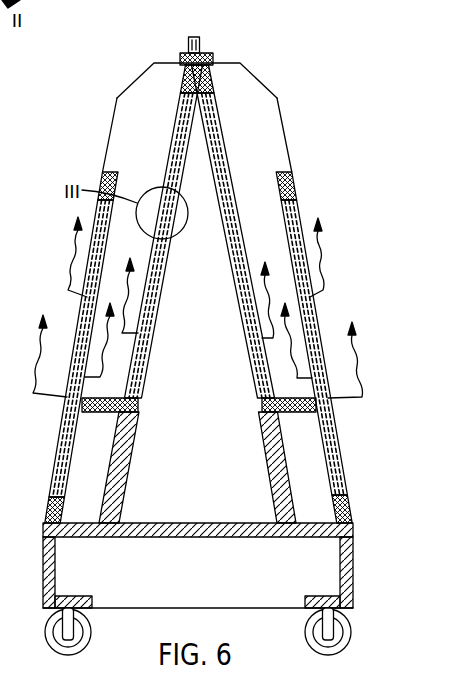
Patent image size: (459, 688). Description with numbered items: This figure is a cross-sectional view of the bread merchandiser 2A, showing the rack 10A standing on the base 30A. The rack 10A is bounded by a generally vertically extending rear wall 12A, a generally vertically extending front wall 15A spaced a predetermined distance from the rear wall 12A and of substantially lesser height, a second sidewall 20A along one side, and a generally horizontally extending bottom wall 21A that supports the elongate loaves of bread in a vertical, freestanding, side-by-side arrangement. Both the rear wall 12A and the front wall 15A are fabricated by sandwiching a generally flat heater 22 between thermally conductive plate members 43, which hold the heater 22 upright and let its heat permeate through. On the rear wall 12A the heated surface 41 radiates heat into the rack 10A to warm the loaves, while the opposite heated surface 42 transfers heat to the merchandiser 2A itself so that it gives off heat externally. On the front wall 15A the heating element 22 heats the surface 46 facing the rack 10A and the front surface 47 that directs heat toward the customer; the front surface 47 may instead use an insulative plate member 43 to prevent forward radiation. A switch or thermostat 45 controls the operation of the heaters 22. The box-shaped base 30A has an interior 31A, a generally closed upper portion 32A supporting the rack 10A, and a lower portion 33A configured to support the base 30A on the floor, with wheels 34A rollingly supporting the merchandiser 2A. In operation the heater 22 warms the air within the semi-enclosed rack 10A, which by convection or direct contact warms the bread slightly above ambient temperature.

The merchandiser 2A is at (326, 50).
The rack 10A is at (137, 168).
The rear wall 12A is at (173, 102).
The front wall 15A is at (206, 345).
The second sidewall 20A is at (262, 83).
The bottom wall 21A is at (287, 400).
The heater 22 is at (300, 213).
The base 30A is at (228, 587).
The interior 31A is at (252, 592).
The upper portion 32A is at (243, 540).
The lower portion 33A is at (332, 600).
The wheels 34A is at (90, 623).
The heated surface 41 is at (171, 114).
The heated surface 42 is at (229, 258).
The plate members 43 is at (230, 142).
The thermostat 45 is at (253, 303).
The heated surface 46 is at (292, 255).
The front surface 47 is at (318, 318).